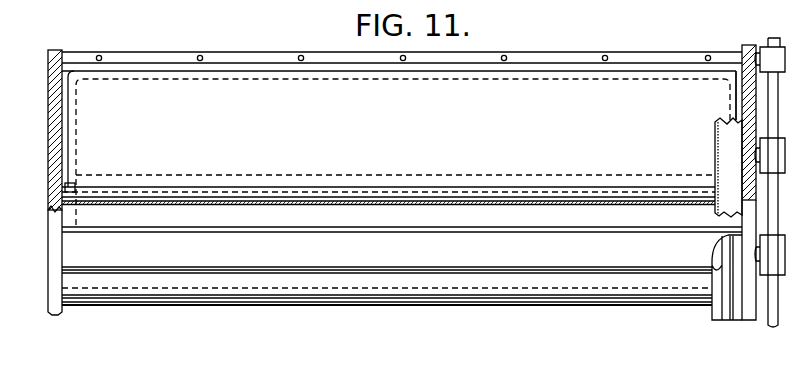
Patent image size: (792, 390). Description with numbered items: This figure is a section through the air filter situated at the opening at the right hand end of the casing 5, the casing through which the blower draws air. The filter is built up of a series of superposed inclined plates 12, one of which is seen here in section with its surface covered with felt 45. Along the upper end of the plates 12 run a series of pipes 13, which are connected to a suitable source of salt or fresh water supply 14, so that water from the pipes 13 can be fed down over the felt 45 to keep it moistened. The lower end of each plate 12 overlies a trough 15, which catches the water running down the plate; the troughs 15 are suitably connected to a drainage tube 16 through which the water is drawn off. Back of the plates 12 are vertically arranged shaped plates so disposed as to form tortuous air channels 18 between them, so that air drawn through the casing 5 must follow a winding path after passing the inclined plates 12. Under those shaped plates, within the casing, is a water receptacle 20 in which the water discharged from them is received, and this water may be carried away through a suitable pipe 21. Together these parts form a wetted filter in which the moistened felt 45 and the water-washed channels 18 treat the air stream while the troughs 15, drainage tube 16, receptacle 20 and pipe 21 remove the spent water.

The casing 5 is at (51, 157).
The inclined plate 12 is at (270, 78).
The pipe 13 is at (228, 58).
The water supply 14 is at (770, 42).
The trough 15 is at (585, 196).
The drainage tube 16 is at (723, 140).
The tortuous air channel 18 is at (578, 0).
The water receptacle 20 is at (632, 0).
The pipe 21 is at (776, 0).
The felt 45 is at (350, 134).